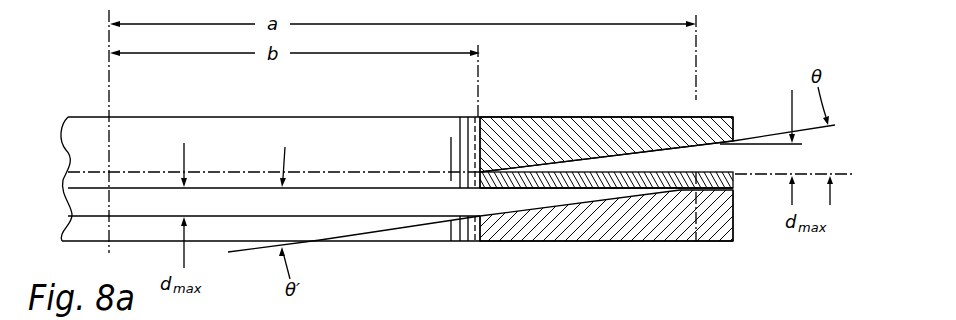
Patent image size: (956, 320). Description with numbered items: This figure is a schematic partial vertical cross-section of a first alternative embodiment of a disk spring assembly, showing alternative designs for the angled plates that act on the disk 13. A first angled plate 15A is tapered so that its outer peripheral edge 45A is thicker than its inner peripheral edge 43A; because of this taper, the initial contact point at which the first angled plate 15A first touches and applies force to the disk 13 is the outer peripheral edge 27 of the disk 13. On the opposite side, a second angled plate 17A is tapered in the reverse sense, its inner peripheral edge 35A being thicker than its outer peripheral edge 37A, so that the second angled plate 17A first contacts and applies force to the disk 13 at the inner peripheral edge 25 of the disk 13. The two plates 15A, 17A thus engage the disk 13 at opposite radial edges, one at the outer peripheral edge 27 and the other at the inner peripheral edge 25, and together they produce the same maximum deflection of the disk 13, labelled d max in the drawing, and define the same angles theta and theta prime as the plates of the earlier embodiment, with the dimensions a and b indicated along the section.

The disk 13 is at (717, 190).
The first angled plate 15A is at (597, 228).
The second angled plate 17A is at (593, 135).
The inner peripheral edge of the disk 25 is at (480, 172).
The outer peripheral edge of the disk 27 is at (701, 162).
The inner peripheral edge of the second angled plate 35A is at (480, 172).
The outer peripheral edge of the second angled plate 37A is at (695, 162).
The inner peripheral edge of the first angled plate 43A is at (480, 215).
The outer peripheral edge of the first angled plate 45A is at (697, 170).